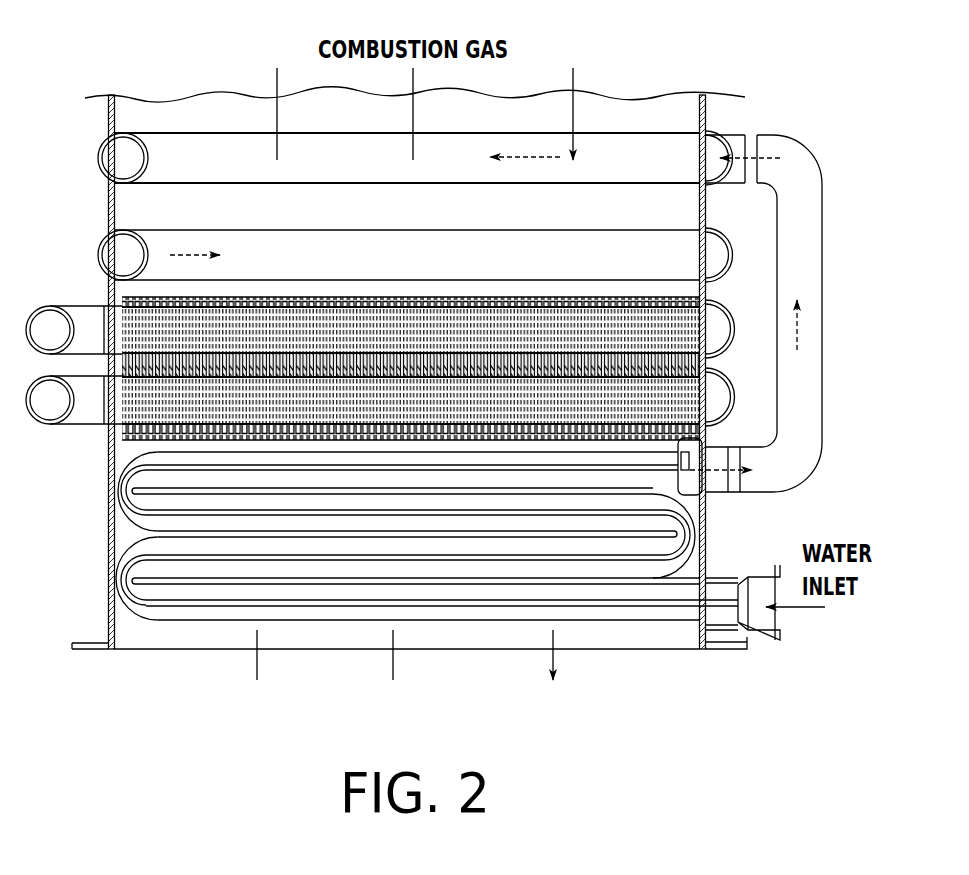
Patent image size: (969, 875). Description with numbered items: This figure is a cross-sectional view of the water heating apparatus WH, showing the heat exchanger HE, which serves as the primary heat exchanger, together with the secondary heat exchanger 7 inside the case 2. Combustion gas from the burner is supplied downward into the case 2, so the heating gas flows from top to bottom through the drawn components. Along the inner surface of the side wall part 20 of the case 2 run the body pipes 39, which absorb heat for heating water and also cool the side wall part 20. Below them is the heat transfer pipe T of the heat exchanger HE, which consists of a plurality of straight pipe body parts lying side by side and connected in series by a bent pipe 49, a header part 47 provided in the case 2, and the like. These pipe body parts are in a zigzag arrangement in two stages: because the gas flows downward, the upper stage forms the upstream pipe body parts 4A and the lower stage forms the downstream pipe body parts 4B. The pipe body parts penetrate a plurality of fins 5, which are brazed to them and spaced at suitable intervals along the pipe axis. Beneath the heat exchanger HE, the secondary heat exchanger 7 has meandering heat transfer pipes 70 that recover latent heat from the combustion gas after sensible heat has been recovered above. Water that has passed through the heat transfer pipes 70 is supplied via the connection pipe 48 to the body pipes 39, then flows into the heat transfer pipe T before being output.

The water heating apparatus WH is at (134, 68).
The heat exchanger HE is at (100, 212).
The case 2 is at (110, 115).
The side wall part 20 is at (110, 120).
The body pipes 39 is at (147, 237).
The bent pipe 49 is at (82, 305).
The heat transfer pipe T is at (358, 318).
The fins 5 is at (284, 300).
The upstream pipe body parts 4A is at (437, 330).
The downstream pipe body parts 4B is at (422, 408).
The header part 47 is at (730, 387).
The connection pipe 48 is at (808, 272).
The secondary heat exchanger 7 is at (117, 458).
The heat transfer pipes 70 is at (345, 593).